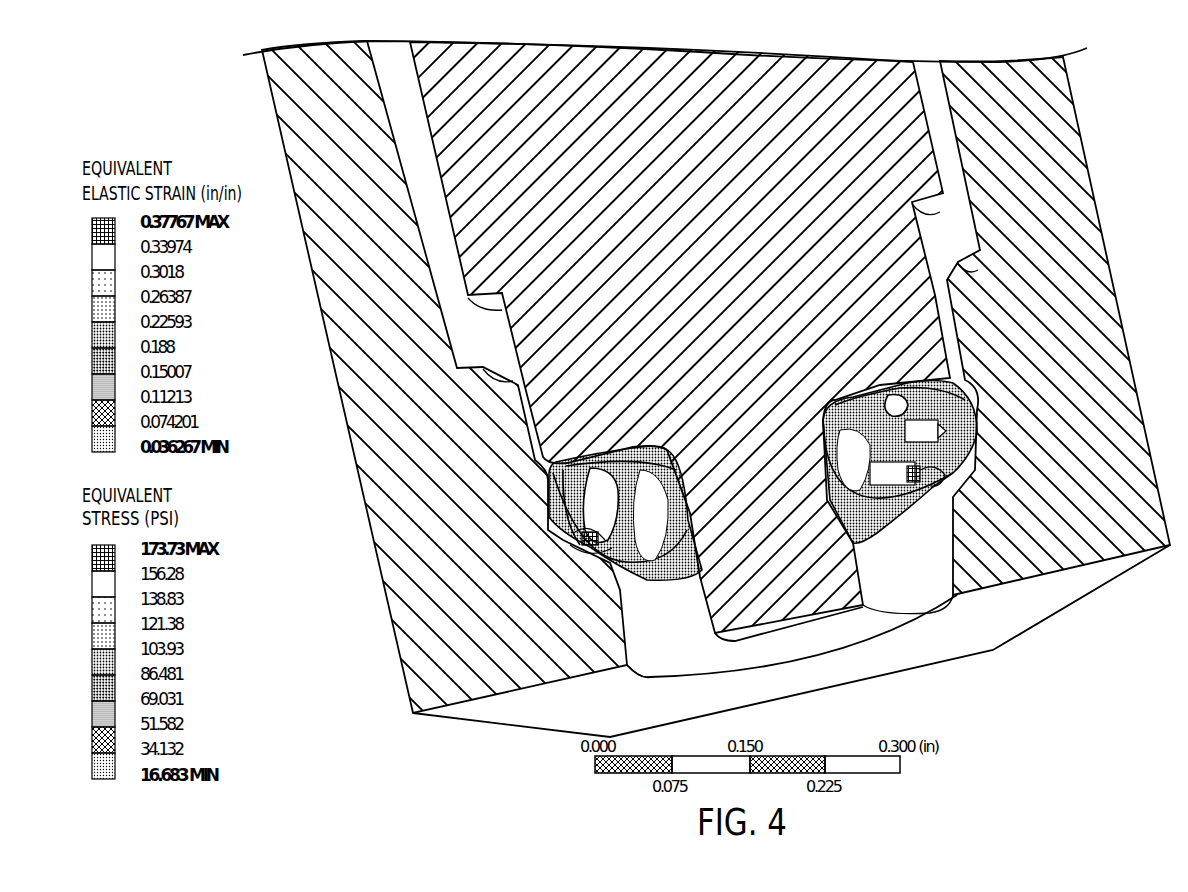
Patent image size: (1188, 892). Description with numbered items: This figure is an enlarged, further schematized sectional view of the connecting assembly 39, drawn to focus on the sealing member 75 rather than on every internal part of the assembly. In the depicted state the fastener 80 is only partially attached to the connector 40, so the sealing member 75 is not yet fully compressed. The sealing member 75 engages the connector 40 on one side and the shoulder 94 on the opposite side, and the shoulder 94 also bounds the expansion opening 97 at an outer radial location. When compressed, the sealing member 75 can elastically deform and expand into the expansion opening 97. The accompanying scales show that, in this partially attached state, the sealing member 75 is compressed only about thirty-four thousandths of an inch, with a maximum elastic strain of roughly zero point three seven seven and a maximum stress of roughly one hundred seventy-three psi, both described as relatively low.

The connecting assembly 39 is at (1112, 92).
The connector 40 is at (873, 78).
The sealing member 75 is at (547, 492).
The fastener 80 is at (1138, 390).
The shoulder 94 is at (583, 545).
The expansion opening 97 is at (670, 660).